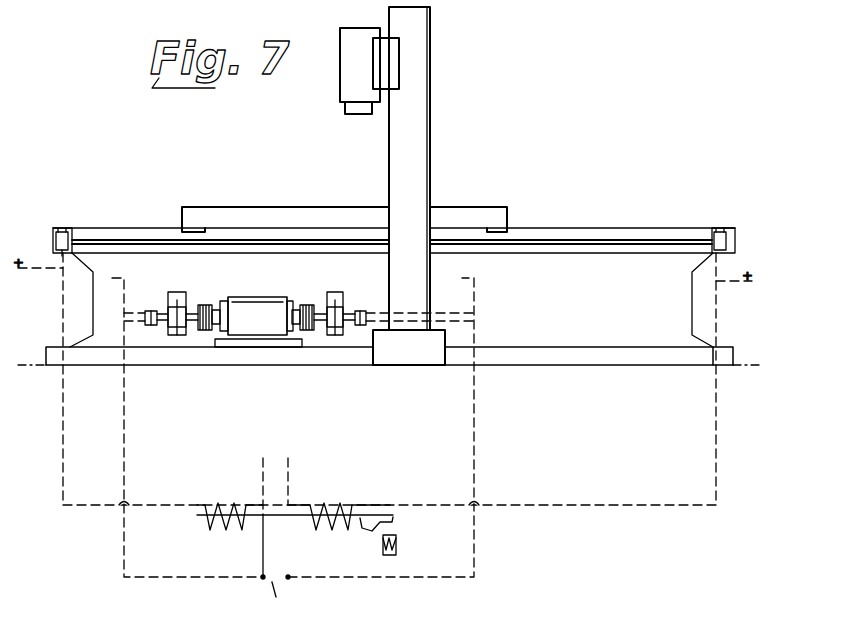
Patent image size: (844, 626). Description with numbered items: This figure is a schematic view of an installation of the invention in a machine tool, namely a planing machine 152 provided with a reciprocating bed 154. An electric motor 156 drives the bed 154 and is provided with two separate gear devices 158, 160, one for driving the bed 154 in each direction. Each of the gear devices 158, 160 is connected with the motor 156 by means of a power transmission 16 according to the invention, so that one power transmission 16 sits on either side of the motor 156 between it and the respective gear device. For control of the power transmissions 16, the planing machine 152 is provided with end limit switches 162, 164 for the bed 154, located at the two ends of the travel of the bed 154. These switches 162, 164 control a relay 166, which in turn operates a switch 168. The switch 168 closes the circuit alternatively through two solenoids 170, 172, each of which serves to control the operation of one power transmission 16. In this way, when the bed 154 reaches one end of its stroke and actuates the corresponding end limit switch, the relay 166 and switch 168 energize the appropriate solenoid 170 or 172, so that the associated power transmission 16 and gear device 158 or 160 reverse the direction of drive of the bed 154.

The planing machine 152 is at (517, 267).
The reciprocating bed 154 is at (341, 214).
The electric motor 156 is at (252, 315).
The gear device 158 is at (202, 278).
The gear device 160 is at (335, 292).
The end limit switch 162 is at (67, 233).
The end limit switch 164 is at (722, 230).
The relay 166 is at (289, 505).
The switch 168 is at (297, 599).
The solenoid 170 is at (149, 310).
The solenoid 172 is at (367, 303).
The power transmission 16 is at (207, 305).